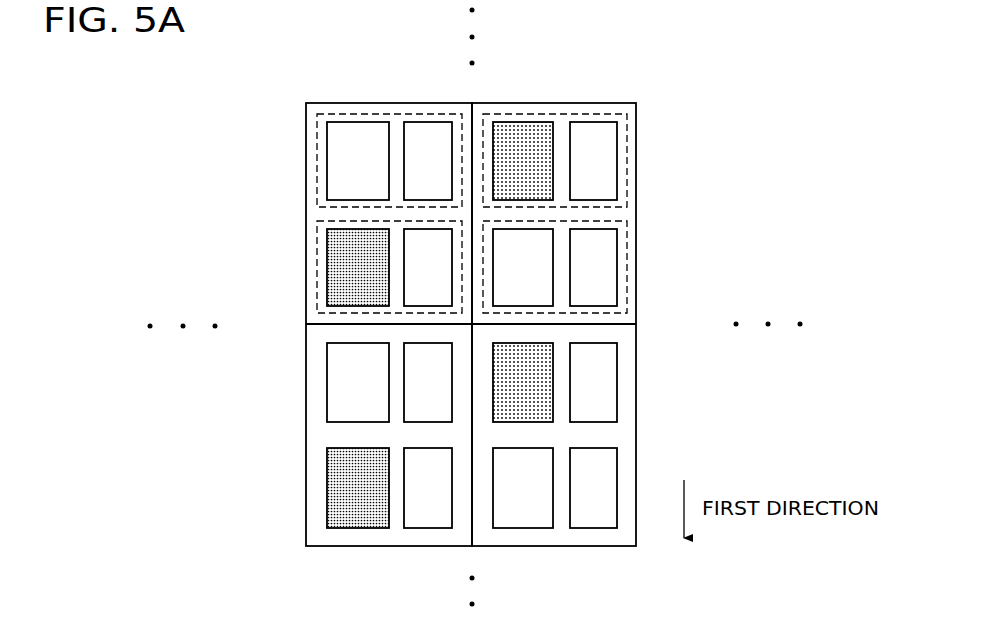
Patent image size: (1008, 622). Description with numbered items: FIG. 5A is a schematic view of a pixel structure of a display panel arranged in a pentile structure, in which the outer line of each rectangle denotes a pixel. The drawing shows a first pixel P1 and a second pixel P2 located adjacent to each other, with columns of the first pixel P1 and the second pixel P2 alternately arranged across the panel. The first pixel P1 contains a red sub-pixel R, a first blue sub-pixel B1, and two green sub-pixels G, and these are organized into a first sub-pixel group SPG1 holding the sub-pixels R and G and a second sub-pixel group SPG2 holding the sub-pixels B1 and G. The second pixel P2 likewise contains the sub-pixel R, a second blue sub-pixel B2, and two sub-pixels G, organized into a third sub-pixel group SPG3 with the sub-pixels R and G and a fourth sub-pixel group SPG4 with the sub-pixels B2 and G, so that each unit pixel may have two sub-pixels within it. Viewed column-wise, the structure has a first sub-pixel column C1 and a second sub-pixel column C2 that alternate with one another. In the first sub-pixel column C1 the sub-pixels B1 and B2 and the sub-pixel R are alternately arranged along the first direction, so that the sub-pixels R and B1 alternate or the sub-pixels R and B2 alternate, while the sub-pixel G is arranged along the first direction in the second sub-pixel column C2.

The first pixel P1 is at (306, 213).
The second pixel P2 is at (636, 212).
The first sub-pixel group SPG1 is at (317, 162).
The second sub-pixel group SPG2 is at (317, 267).
The third sub-pixel group SPG3 is at (627, 267).
The fourth sub-pixel group SPG4 is at (627, 160).
The first sub-pixel column C1 is at (440, 280).
The second sub-pixel column C2 is at (510, 280).
The red sub-pixel R is at (440, 325).
The green sub-pixel G is at (510, 325).
The first blue sub-pixel B1 is at (358, 378).
The second blue sub-pixel B2 is at (523, 272).